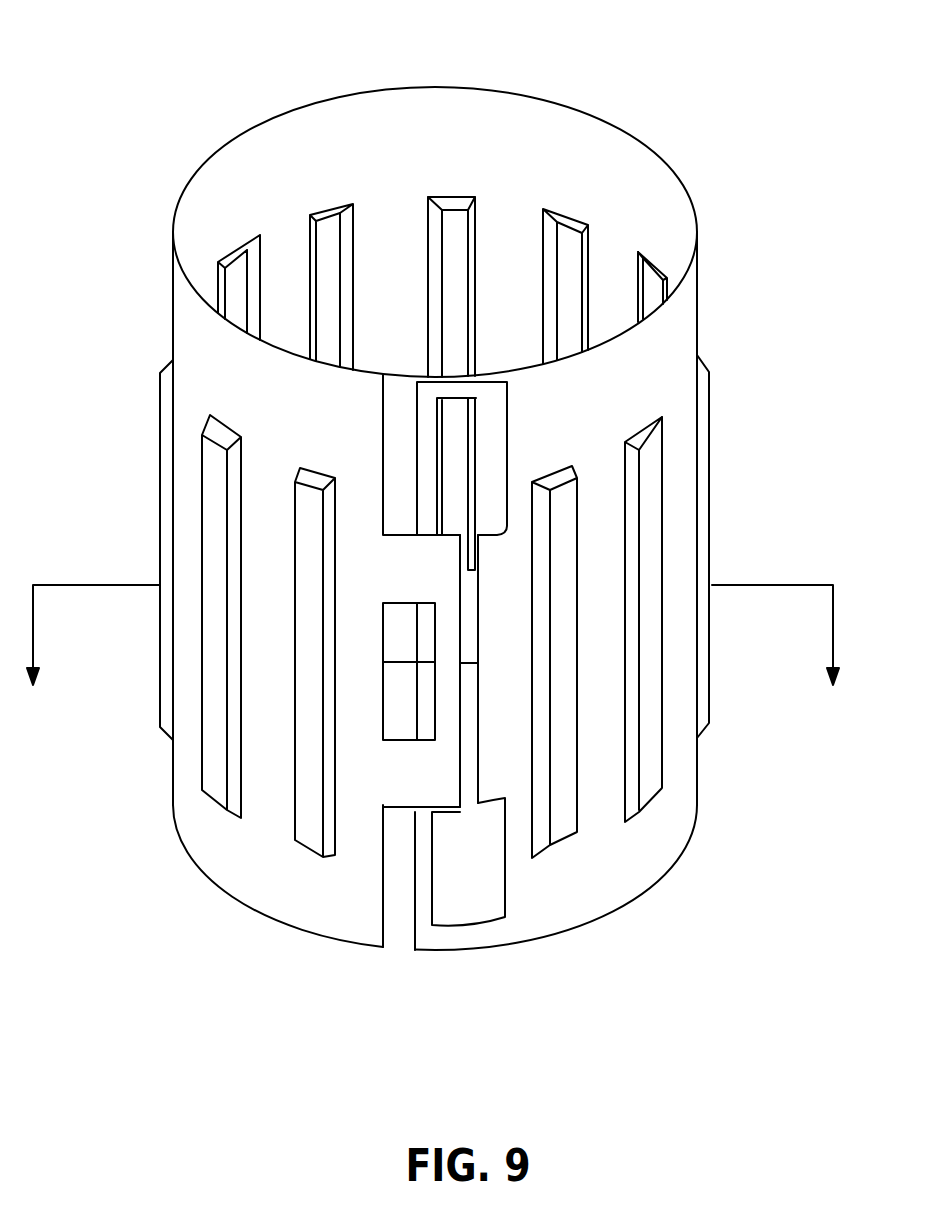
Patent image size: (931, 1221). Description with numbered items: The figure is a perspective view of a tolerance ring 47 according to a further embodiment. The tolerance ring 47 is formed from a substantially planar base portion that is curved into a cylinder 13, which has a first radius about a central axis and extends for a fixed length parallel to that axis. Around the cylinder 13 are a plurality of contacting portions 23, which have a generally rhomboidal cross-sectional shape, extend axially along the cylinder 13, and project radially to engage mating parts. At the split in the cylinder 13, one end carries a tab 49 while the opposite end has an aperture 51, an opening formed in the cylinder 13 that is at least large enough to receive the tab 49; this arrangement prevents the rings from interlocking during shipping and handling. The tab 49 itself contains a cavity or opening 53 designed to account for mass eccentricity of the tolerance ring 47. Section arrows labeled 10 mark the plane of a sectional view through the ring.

The section line 10- 10 is at (434, 654).
The cylinder 13 is at (677, 555).
The contacting portions 23 is at (662, 462).
The tolerance ring 47 is at (758, 184).
The tab 49 is at (382, 567).
The aperture 51 is at (475, 437).
The cavity or opening 53 is at (382, 687).